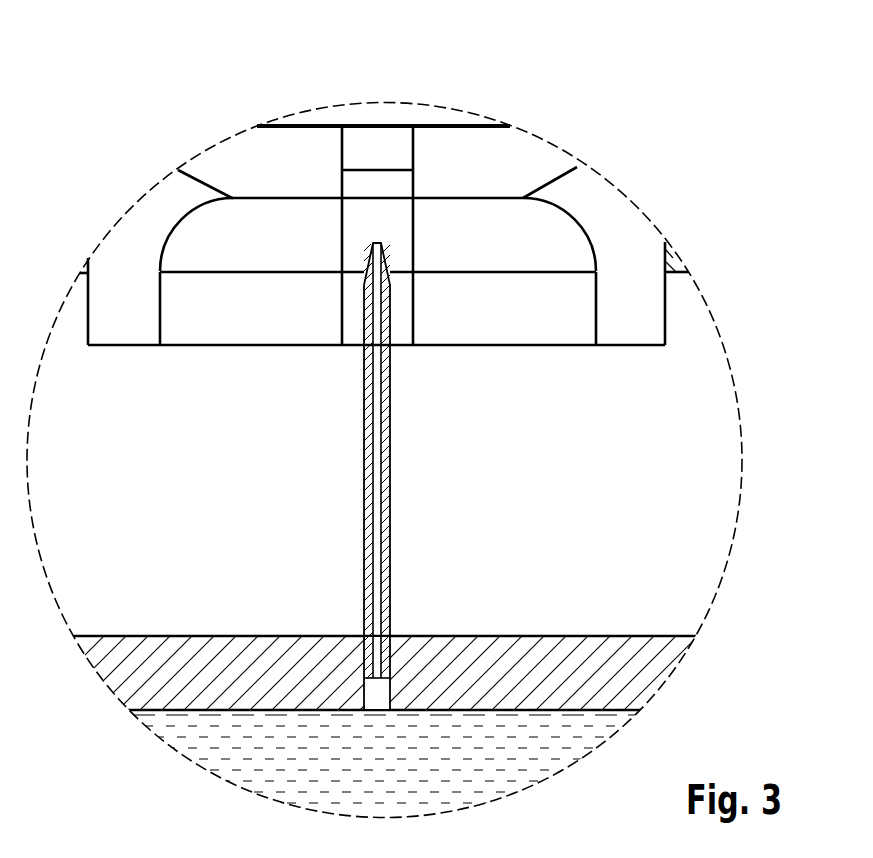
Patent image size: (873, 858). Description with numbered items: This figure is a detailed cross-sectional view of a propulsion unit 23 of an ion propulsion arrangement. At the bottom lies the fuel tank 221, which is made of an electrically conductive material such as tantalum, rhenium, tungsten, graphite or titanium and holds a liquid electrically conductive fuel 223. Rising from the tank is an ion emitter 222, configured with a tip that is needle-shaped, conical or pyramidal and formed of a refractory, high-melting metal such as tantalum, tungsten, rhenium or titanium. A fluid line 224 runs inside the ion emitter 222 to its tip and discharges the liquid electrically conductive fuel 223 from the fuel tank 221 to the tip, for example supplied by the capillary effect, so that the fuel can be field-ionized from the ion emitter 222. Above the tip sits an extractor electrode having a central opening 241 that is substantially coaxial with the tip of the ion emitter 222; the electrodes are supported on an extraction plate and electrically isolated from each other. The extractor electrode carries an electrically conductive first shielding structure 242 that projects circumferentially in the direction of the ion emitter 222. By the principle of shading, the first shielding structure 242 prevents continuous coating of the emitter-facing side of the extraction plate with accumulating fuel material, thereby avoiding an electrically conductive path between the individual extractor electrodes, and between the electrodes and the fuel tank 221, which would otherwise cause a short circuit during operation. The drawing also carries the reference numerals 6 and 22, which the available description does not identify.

The openings 6 is at (277, 172).
The holder 22 is at (430, 511).
The propulsion unit 23 is at (428, 189).
The fuel tank 221 is at (640, 668).
The ion emitter 222 is at (366, 450).
The liquid electrically conductive fuel 223 is at (557, 745).
The fluid line 224 is at (386, 465).
The central opening 241 is at (383, 126).
The first shielding structure 242 is at (647, 297).